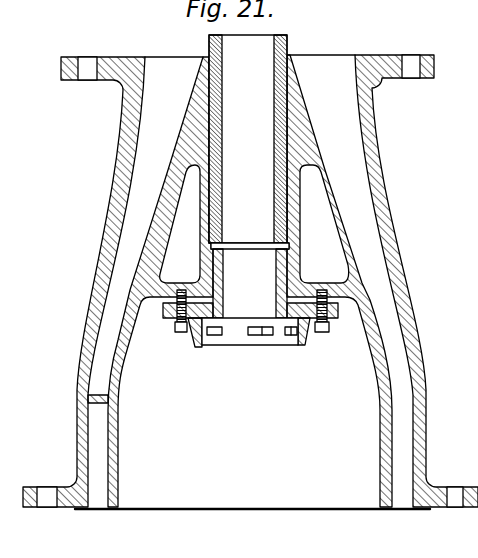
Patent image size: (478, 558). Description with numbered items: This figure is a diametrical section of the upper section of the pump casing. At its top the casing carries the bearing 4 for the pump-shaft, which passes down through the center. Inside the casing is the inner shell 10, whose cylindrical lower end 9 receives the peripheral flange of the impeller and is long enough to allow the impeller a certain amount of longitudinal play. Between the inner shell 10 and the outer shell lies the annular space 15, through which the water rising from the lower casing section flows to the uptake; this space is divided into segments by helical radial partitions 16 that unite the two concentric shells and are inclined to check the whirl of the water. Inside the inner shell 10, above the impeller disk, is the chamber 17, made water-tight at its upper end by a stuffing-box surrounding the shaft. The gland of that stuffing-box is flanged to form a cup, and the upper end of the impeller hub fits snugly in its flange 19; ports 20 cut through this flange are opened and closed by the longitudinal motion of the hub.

The bearing 4 is at (248, 139).
The cylindrical lower end 9 is at (381, 436).
The inner shell 10 is at (334, 213).
The annular space 15 is at (370, 280).
The helical radial partition 16 is at (98, 403).
The chamber 17 is at (245, 400).
The flange 19 is at (309, 338).
The port 20 is at (262, 335).